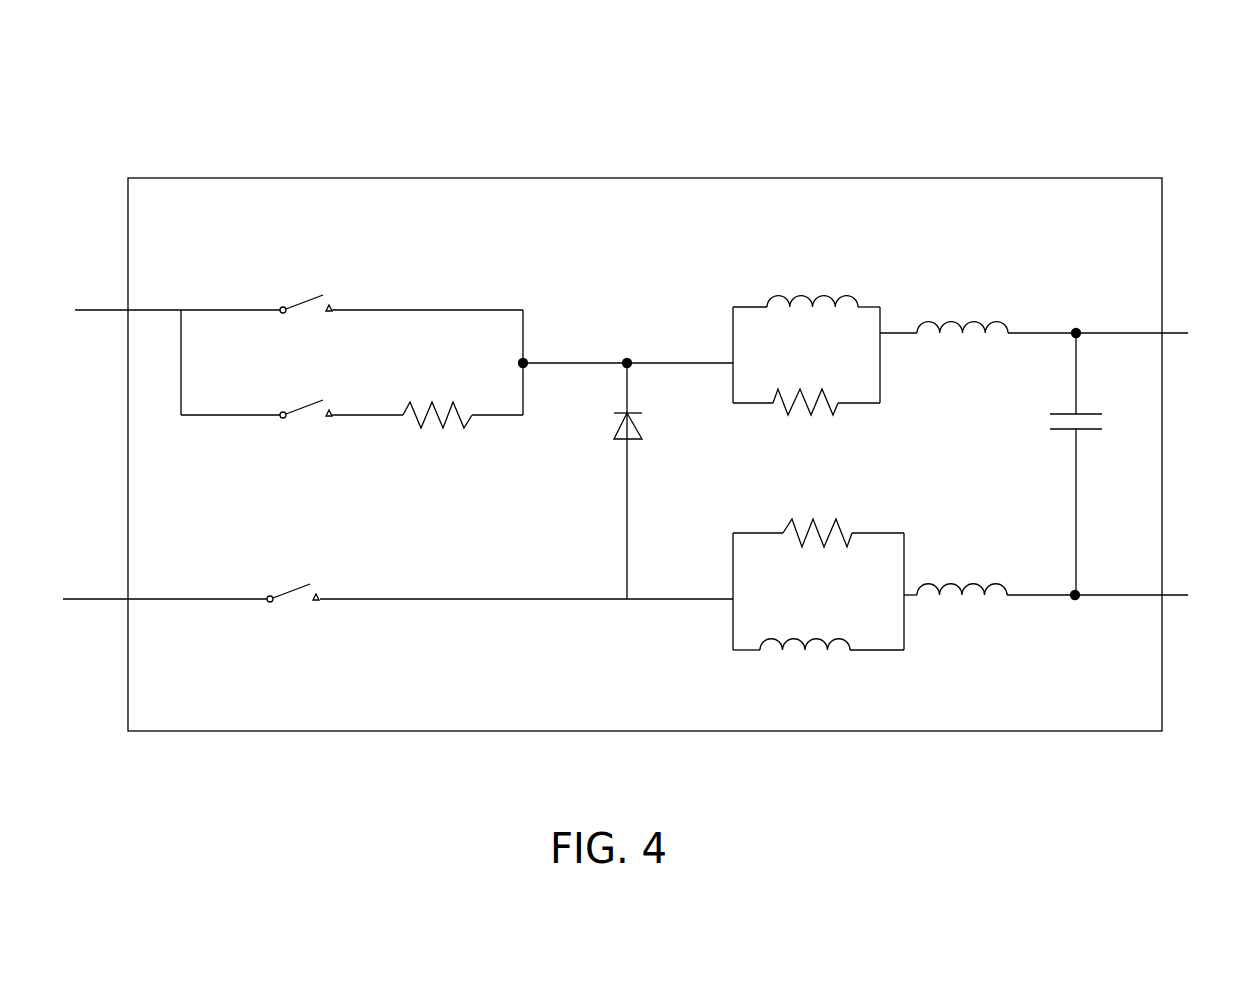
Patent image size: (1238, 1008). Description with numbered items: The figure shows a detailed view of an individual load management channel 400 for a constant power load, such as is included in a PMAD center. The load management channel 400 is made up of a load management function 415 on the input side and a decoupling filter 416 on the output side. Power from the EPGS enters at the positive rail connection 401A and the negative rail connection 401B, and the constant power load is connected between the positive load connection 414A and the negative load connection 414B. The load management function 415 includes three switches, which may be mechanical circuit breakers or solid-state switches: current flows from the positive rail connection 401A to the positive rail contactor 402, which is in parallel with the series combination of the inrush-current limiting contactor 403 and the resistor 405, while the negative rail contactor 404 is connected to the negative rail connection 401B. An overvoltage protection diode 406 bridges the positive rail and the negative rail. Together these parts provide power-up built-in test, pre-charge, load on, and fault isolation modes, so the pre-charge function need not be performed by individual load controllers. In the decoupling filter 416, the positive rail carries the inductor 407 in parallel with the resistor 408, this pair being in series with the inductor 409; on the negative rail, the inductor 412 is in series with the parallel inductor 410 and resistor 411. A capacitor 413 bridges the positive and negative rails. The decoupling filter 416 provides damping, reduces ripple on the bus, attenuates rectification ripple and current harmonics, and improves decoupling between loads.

The load management channel 400 is at (221, 216).
The positive rail connection 401A is at (73, 322).
The negative rail connection 401B is at (65, 608).
The positive rail contactor 402 is at (305, 313).
The inrush-current limiting contactor 403 is at (305, 425).
The negative rail contactor 404 is at (292, 608).
The resistor 405 is at (422, 430).
The overvoltage protection diode 406 is at (612, 425).
The inductor 407 is at (805, 290).
The resistor 408 is at (817, 417).
The inductor 409 is at (963, 315).
The inductor 410 is at (803, 519).
The resistor 411 is at (800, 660).
The inductor 412 is at (970, 603).
The capacitor 413 is at (1055, 422).
The positive load connection 414A is at (1235, 343).
The negative load connection 414B is at (1235, 608).
The load management function 415 is at (360, 212).
The decoupling filter 416 is at (908, 212).